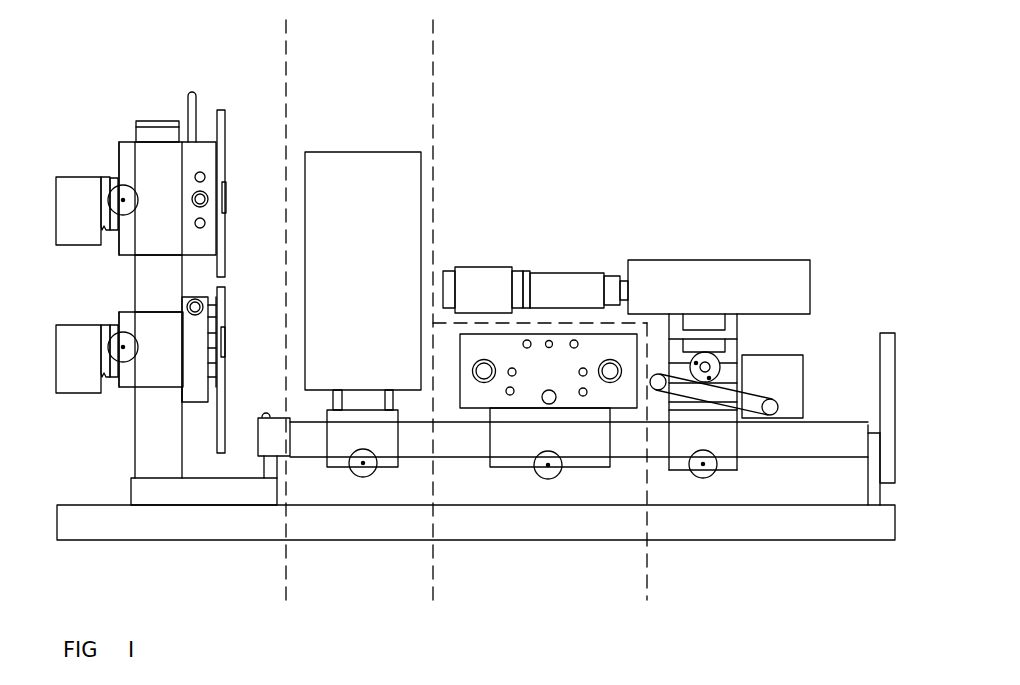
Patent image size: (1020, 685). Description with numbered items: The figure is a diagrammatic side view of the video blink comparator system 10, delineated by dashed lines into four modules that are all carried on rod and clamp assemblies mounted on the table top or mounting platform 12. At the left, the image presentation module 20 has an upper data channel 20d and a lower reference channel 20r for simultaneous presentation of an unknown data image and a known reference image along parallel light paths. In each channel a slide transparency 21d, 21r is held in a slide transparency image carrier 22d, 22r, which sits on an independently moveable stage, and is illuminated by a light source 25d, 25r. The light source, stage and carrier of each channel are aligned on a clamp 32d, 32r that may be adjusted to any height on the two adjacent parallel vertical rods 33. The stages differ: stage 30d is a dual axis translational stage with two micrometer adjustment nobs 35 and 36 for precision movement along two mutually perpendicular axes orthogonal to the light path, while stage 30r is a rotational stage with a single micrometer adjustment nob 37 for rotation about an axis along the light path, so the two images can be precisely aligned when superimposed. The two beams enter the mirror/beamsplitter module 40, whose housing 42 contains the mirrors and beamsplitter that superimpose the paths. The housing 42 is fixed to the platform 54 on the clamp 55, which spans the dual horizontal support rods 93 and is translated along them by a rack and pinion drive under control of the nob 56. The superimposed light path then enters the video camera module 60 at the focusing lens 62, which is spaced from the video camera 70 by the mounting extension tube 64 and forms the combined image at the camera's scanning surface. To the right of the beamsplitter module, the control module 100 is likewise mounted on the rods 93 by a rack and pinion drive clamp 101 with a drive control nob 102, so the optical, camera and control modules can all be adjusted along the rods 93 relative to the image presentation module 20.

The video blink comparator system 10 is at (101, 50).
The mounting platform 12 is at (90, 525).
The image presentation module 20 is at (167, 32).
The data channel 20d is at (137, 189).
The reference channel 20r is at (137, 339).
The data slide transparency 21d is at (226, 200).
The reference slide transparency 21r is at (226, 347).
The data slide transparency image carrier 22d is at (225, 134).
The reference slide transparency image carrier 22r is at (221, 457).
The data light source 25d is at (74, 177).
The reference light source 25r is at (78, 325).
The dual axis translational stage 30d is at (202, 147).
The rotational stage 30r is at (193, 392).
The data channel clamp 32d is at (140, 152).
The reference channel clamp 32r is at (145, 370).
The vertical rods 33 is at (140, 282).
The micrometer adjustment nob 35 is at (203, 191).
The micrometer adjustment nob 36 is at (189, 100).
The micrometer adjustment nob 37 is at (200, 298).
The mirror/beamsplitter module 40 is at (377, 43).
The module housing 42 is at (349, 160).
The platform 54 is at (332, 417).
The clamp 55 is at (337, 443).
The nob 56 is at (365, 478).
The video camera module 60 is at (678, 84).
The focusing lens 62 is at (481, 268).
The mounting extension tube 64 is at (560, 272).
The video camera 70 is at (780, 267).
The horizontal support rods 93 is at (417, 443).
The control module 100 is at (618, 398).
The rack and pinion drive clamp 101 is at (503, 448).
The rack and pinion drive control nob 102 is at (555, 477).